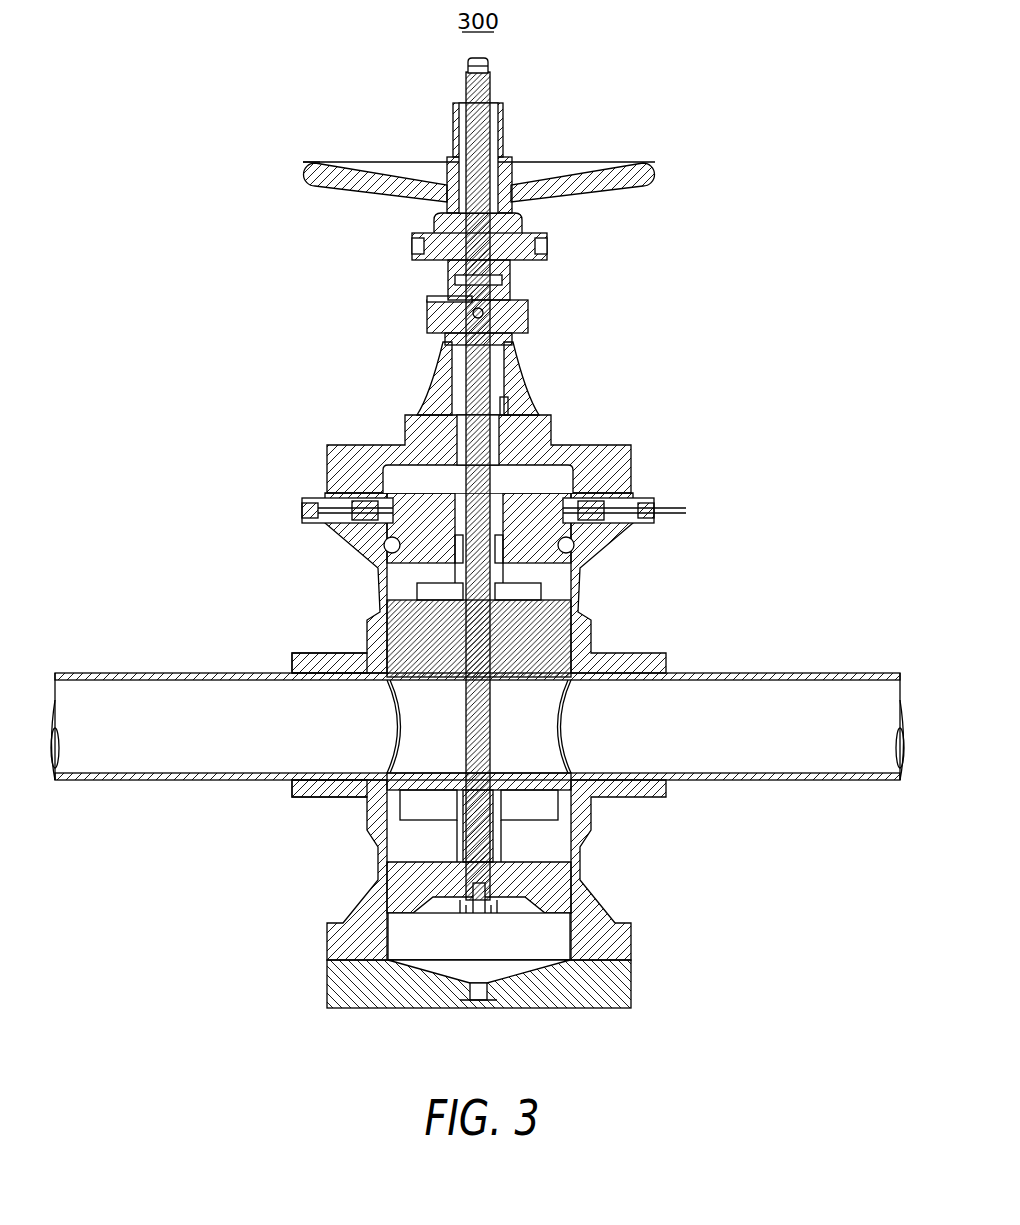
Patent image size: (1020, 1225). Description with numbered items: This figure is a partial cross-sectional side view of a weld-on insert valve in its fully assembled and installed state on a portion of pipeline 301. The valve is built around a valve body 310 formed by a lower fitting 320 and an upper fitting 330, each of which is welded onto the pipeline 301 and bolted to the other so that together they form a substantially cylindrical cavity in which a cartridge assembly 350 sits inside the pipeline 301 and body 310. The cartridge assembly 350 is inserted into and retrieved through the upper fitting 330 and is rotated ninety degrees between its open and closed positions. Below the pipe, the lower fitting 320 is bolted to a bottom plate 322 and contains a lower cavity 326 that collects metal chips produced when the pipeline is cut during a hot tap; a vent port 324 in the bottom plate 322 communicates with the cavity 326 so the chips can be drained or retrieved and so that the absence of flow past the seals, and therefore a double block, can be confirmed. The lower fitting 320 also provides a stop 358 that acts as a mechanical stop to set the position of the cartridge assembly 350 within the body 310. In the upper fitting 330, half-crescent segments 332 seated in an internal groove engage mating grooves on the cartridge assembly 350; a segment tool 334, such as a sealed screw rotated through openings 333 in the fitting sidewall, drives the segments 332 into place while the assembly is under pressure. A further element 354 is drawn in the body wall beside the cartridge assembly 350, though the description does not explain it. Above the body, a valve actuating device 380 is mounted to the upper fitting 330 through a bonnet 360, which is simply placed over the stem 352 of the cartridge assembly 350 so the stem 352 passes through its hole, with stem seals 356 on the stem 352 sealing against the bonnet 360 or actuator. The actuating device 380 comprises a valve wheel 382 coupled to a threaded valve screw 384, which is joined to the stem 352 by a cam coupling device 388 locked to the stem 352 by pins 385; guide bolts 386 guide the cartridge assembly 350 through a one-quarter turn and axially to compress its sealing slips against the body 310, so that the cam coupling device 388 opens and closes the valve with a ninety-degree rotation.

The pipeline 301 is at (826, 766).
The valve body 310 is at (155, 668).
The lower fitting 320 is at (360, 800).
The bottom plate 322 is at (335, 983).
The vent port 324 is at (485, 1007).
The cavity 326 is at (580, 943).
The upper fitting 330 is at (300, 660).
The half-crescent segments 332 is at (603, 520).
The openings 333 is at (607, 505).
The segment tool 334 is at (302, 510).
The cartridge assembly 350 is at (568, 622).
The stem 352 is at (455, 370).
The seal 354 is at (574, 545).
The stem seals 356 is at (500, 925).
The stop 358 is at (572, 890).
The bonnet 360 is at (625, 462).
The valve actuating device 380 is at (216, 143).
The valve wheel 382 is at (655, 170).
The valve screw 384 is at (498, 88).
The pins 385 is at (470, 298).
The guide bolts 386 is at (530, 315).
The cam coupling device 388 is at (505, 282).